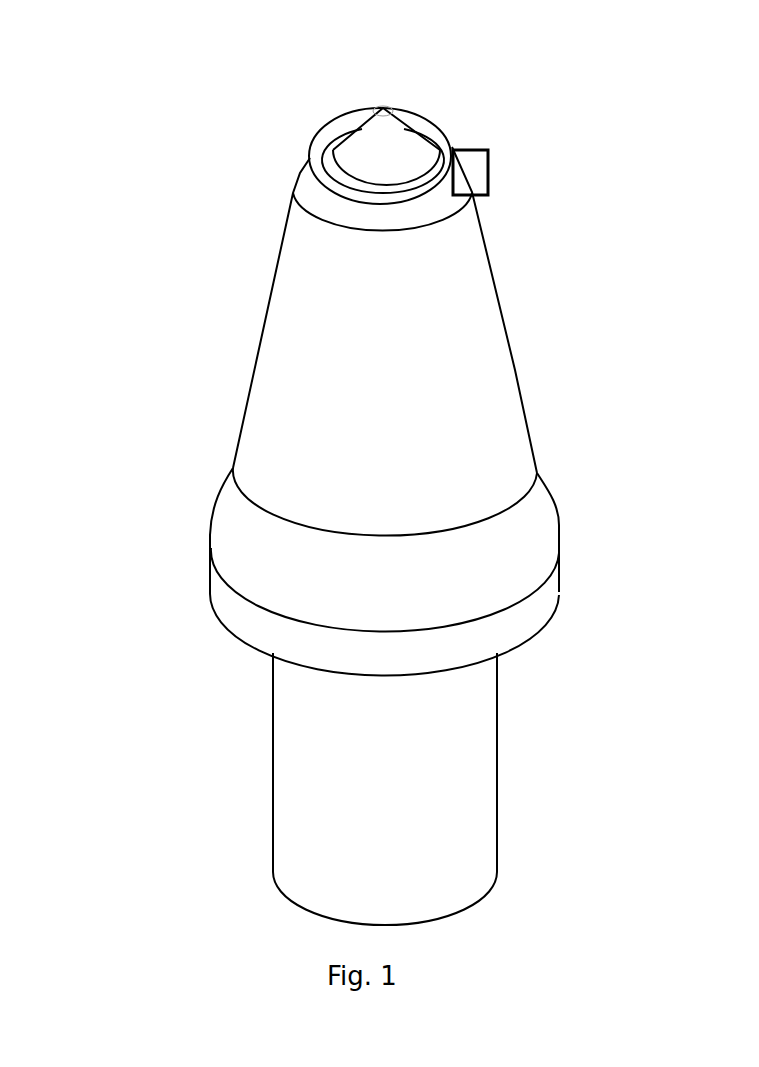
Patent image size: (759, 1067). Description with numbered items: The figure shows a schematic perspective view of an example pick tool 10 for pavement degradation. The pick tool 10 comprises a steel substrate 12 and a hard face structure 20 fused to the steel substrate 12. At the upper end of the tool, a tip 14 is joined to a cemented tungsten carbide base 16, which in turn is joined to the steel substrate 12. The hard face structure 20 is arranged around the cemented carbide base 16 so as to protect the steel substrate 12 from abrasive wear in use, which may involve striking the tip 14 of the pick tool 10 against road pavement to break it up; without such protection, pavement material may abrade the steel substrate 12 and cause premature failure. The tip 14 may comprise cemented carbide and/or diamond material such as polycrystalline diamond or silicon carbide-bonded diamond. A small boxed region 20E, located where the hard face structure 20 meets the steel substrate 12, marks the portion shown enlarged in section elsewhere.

The pick tool 10 is at (160, 103).
The steel substrate 12 is at (515, 370).
The tip 14 is at (383, 107).
The cemented tungsten carbide base 16 is at (418, 122).
The hard face structure 20 is at (300, 173).
The region 20E is at (500, 172).